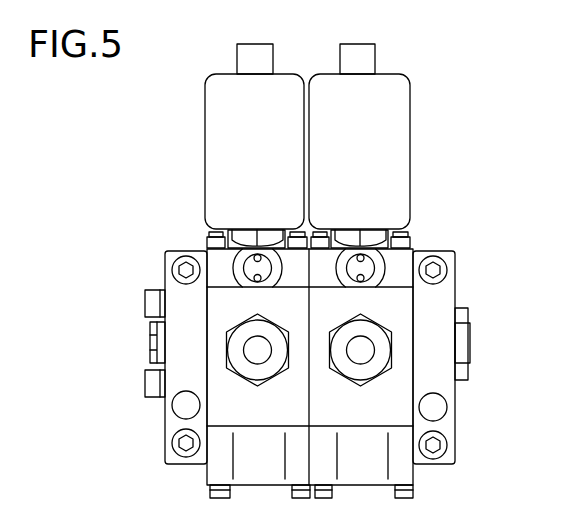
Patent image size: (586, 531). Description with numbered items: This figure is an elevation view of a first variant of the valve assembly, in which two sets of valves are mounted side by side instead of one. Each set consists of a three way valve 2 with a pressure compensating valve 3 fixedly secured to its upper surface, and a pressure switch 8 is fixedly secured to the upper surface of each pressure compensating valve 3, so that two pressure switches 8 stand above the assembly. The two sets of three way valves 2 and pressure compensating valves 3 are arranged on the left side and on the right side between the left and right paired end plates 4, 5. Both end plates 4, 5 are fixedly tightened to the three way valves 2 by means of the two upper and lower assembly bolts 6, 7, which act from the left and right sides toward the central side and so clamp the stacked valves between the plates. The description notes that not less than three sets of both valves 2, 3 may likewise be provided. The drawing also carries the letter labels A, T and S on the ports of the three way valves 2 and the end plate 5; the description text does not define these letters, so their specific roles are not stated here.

The three way valve 2 is at (250, 424).
The pressure compensating valve 3 is at (217, 249).
The left end plate 4 is at (166, 250).
The right end plate 5 is at (450, 251).
The upper assembly bolt 6 is at (148, 289).
The lower assembly bolt 7 is at (152, 399).
The pressure switch 8 is at (205, 122).
The work port A is at (265, 358).
The tank port T is at (150, 347).
The supply port S is at (471, 343).